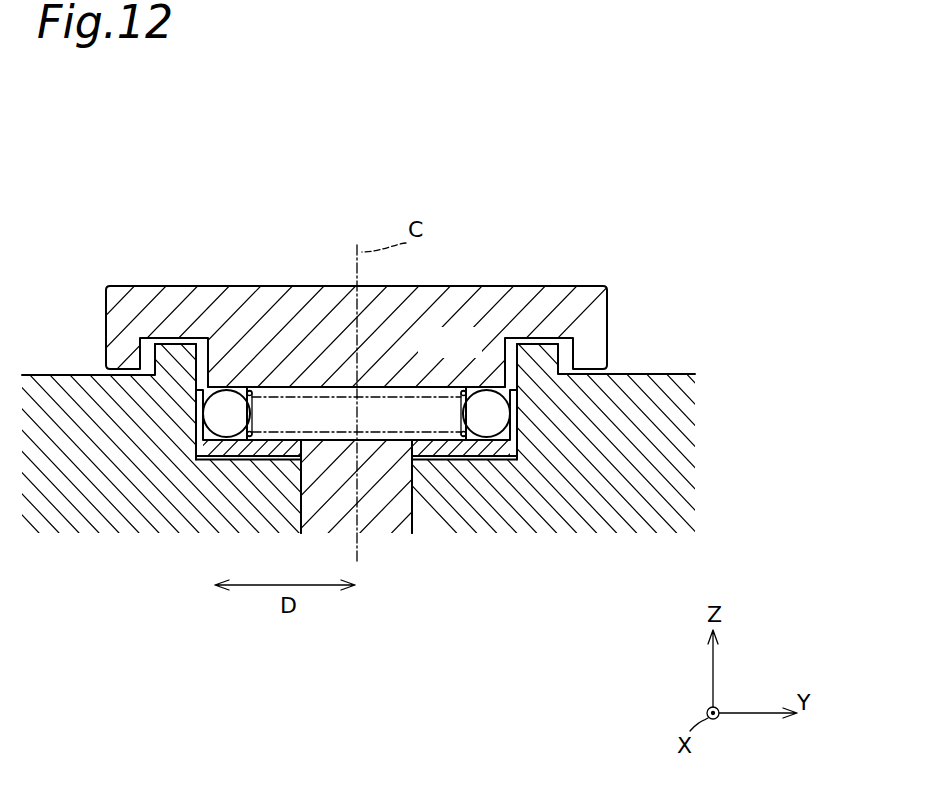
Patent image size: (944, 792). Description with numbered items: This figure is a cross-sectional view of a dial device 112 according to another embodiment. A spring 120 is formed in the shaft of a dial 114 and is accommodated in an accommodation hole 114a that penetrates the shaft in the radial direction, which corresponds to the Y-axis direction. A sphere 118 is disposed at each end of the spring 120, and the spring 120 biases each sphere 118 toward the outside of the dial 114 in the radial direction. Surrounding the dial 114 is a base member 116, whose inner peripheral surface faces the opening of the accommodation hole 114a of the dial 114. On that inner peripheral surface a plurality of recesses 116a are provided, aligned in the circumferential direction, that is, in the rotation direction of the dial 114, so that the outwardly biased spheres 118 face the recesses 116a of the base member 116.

The dial device 112 is at (418, 327).
The dial 114 is at (562, 285).
The accommodation hole 114a is at (436, 388).
The base member 116 is at (498, 515).
The recesses 116a is at (192, 443).
The sphere 118 is at (204, 411).
The spring 120 is at (336, 394).